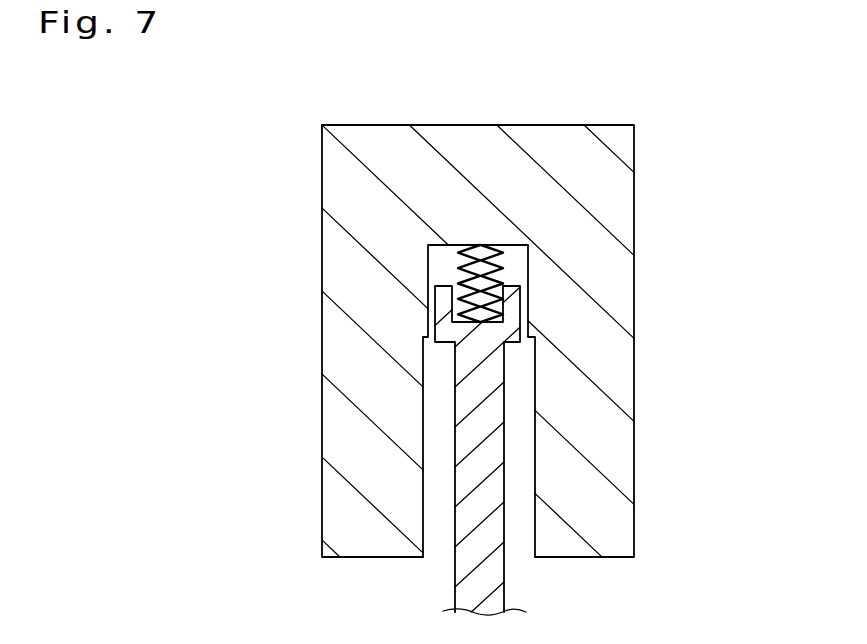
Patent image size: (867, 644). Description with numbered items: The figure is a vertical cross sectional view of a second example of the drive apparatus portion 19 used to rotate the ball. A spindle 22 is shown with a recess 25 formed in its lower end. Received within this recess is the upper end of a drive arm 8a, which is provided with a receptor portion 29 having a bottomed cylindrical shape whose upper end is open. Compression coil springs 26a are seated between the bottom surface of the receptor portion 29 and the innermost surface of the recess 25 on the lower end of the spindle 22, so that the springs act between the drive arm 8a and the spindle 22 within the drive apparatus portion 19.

The drive arm 8a is at (493, 380).
The drive apparatus portion 19 is at (357, 197).
The spindle 22 is at (607, 192).
The recess 25 is at (455, 281).
The compression coil springs 26a is at (445, 245).
The receptor portion 29 is at (502, 291).